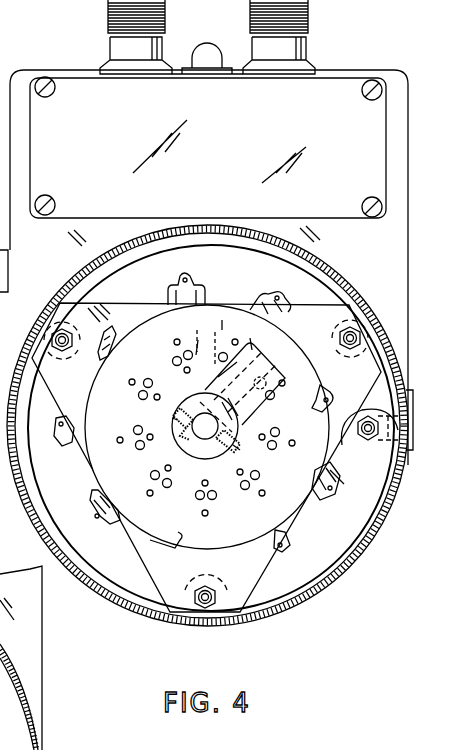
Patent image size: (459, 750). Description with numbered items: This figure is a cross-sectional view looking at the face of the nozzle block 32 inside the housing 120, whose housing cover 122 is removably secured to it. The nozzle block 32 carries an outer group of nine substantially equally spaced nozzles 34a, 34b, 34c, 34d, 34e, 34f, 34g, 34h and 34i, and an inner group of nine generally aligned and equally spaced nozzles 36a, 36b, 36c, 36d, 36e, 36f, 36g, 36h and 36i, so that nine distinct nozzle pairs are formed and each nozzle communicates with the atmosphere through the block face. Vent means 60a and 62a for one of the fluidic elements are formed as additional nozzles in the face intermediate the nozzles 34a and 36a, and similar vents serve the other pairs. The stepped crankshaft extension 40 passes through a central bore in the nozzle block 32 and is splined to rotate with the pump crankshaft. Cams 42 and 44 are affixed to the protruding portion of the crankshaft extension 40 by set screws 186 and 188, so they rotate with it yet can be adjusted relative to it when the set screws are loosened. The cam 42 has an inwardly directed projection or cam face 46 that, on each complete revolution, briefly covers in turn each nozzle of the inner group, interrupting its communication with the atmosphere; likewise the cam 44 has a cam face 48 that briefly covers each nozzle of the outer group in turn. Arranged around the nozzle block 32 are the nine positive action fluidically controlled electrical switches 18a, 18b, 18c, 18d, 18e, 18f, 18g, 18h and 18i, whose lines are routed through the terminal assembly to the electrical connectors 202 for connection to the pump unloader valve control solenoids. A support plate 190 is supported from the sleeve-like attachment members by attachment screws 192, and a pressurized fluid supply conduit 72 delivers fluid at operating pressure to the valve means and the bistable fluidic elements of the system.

The electrical connectors 202 is at (250, 16).
The attachment screws 192 is at (58, 330).
The support plate 190 is at (130, 303).
The fluidically controlled electrical switch 18a is at (186, 276).
The fluidically controlled electrical switch 18i is at (266, 290).
The nozzle 34i is at (222, 320).
The fluidically controlled electrical switch 18b is at (100, 354).
The vent means 60a is at (188, 350).
The cam face 46 is at (198, 340).
The cam face 48 is at (251, 338).
The cam 44 is at (282, 366).
The nozzle 34a is at (174, 342).
The vent means 62a is at (172, 361).
The nozzle 36i is at (228, 331).
The nozzle 36a is at (184, 370).
The nozzle 34d is at (130, 384).
The cam 42 is at (198, 410).
The set screw 186 is at (172, 418).
The nozzle 36d is at (206, 421).
The nozzle 34h is at (284, 385).
The fluidically controlled electrical switch 18h is at (318, 398).
The nozzle 36h is at (274, 419).
The nozzle 36b is at (280, 432).
The crankshaft extension 40 is at (205, 432).
The fluidically controlled electrical switch 18c is at (62, 444).
The nozzle 34e is at (120, 443).
The nozzle 36e is at (154, 464).
The set screw 188 is at (233, 445).
The nozzle 34b is at (292, 447).
The nozzle block 32 is at (96, 473).
The nozzle 36c is at (171, 469).
The pressurized fluid supply conduit 72 is at (368, 441).
The nozzle 34c is at (147, 493).
The nozzle 36f is at (202, 483).
The nozzle 36g is at (238, 476).
The nozzle 34g is at (262, 497).
The fluidically controlled electrical switch 18g is at (320, 496).
The nozzle 34f is at (204, 516).
The fluidically controlled electrical switch 18d is at (102, 524).
The fluidically controlled electrical switch 18f is at (283, 547).
The fluidically controlled electrical switch 18e is at (170, 550).
The housing 120 is at (320, 577).
The housing cover 122 is at (285, 612).